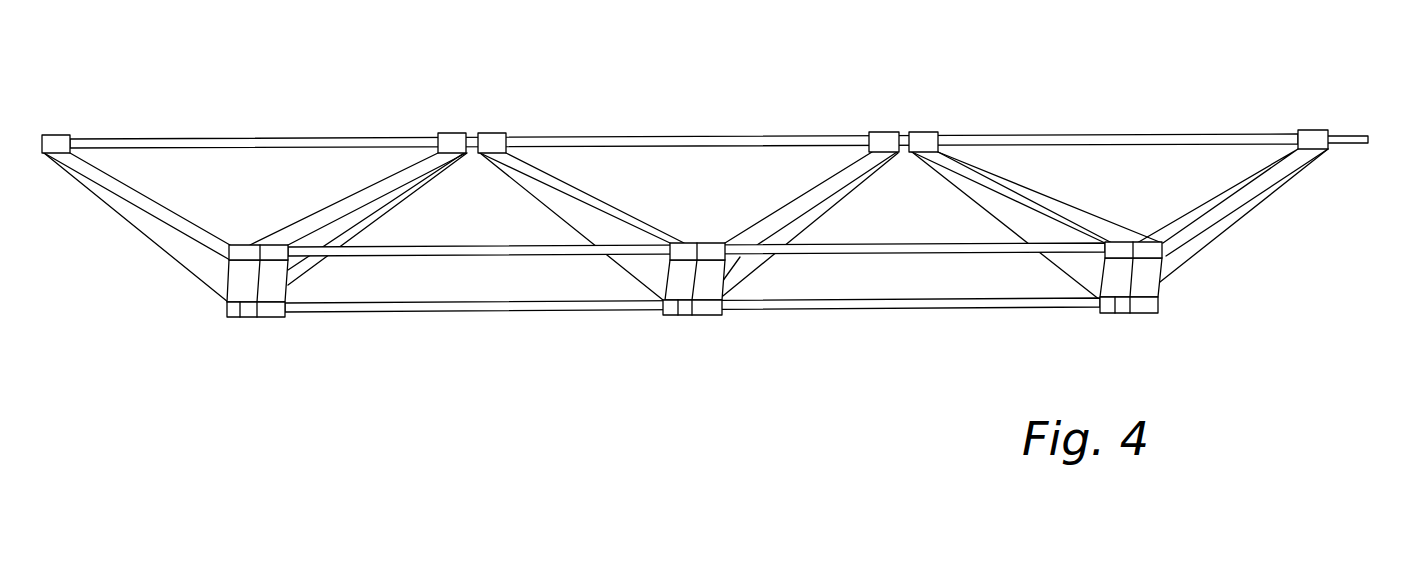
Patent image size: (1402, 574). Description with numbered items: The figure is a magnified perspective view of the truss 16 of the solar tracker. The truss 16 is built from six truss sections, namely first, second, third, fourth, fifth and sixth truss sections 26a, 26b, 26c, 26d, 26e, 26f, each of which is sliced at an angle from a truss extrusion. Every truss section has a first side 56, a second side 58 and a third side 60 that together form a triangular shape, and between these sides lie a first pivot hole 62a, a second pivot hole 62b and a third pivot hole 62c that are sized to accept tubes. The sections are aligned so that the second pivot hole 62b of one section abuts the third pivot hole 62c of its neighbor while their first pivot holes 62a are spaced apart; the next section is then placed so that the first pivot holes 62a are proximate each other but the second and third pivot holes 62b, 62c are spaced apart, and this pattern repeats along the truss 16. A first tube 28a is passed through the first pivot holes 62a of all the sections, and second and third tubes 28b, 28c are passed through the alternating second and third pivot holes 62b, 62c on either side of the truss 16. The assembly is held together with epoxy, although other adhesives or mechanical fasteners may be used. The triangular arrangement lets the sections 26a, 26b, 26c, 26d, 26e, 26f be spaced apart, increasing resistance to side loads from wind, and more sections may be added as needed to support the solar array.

The truss 16 is at (1078, 103).
The first truss section 26a is at (1278, 198).
The second truss section 26b is at (1045, 206).
The third truss section 26c is at (857, 187).
The fourth truss section 26d is at (585, 193).
The fifth truss section 26e is at (399, 210).
The sixth truss section 26f is at (168, 198).
The first tube 28a is at (643, 137).
The second tube 28b is at (895, 312).
The third tube 28c is at (873, 247).
The first side 56 is at (822, 212).
The second side 58 is at (812, 190).
The third side 60 is at (237, 310).
The first pivot hole 62a is at (452, 133).
The second pivot hole 62b is at (712, 243).
The third pivot hole 62c is at (250, 243).